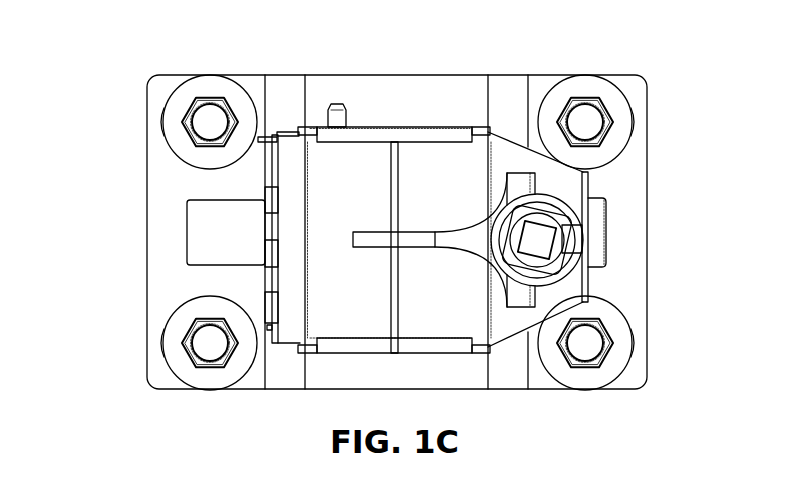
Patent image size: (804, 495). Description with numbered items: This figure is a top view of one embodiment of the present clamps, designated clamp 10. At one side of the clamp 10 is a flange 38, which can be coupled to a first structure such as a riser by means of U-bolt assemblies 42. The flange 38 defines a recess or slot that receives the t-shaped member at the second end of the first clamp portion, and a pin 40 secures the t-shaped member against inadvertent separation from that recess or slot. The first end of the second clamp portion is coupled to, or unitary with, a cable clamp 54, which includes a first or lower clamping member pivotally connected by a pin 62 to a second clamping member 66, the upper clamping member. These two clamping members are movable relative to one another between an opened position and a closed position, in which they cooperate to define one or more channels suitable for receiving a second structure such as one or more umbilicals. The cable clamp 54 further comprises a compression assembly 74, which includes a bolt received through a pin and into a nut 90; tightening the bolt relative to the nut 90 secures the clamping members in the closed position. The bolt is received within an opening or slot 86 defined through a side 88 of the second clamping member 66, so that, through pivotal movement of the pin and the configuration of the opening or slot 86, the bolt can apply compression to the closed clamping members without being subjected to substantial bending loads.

The clamp 10 is at (116, 37).
The flange 38 is at (634, 96).
The pin 40 is at (333, 112).
The U-bolt assemblies 42 is at (205, 378).
The cable clamp 54 is at (405, 92).
The pin 62 is at (274, 131).
The second clamping member 66 is at (576, 289).
The compression assembly 74 is at (592, 244).
The opening or slot 86 is at (591, 252).
The side 88 is at (588, 212).
The nut 90 is at (551, 218).